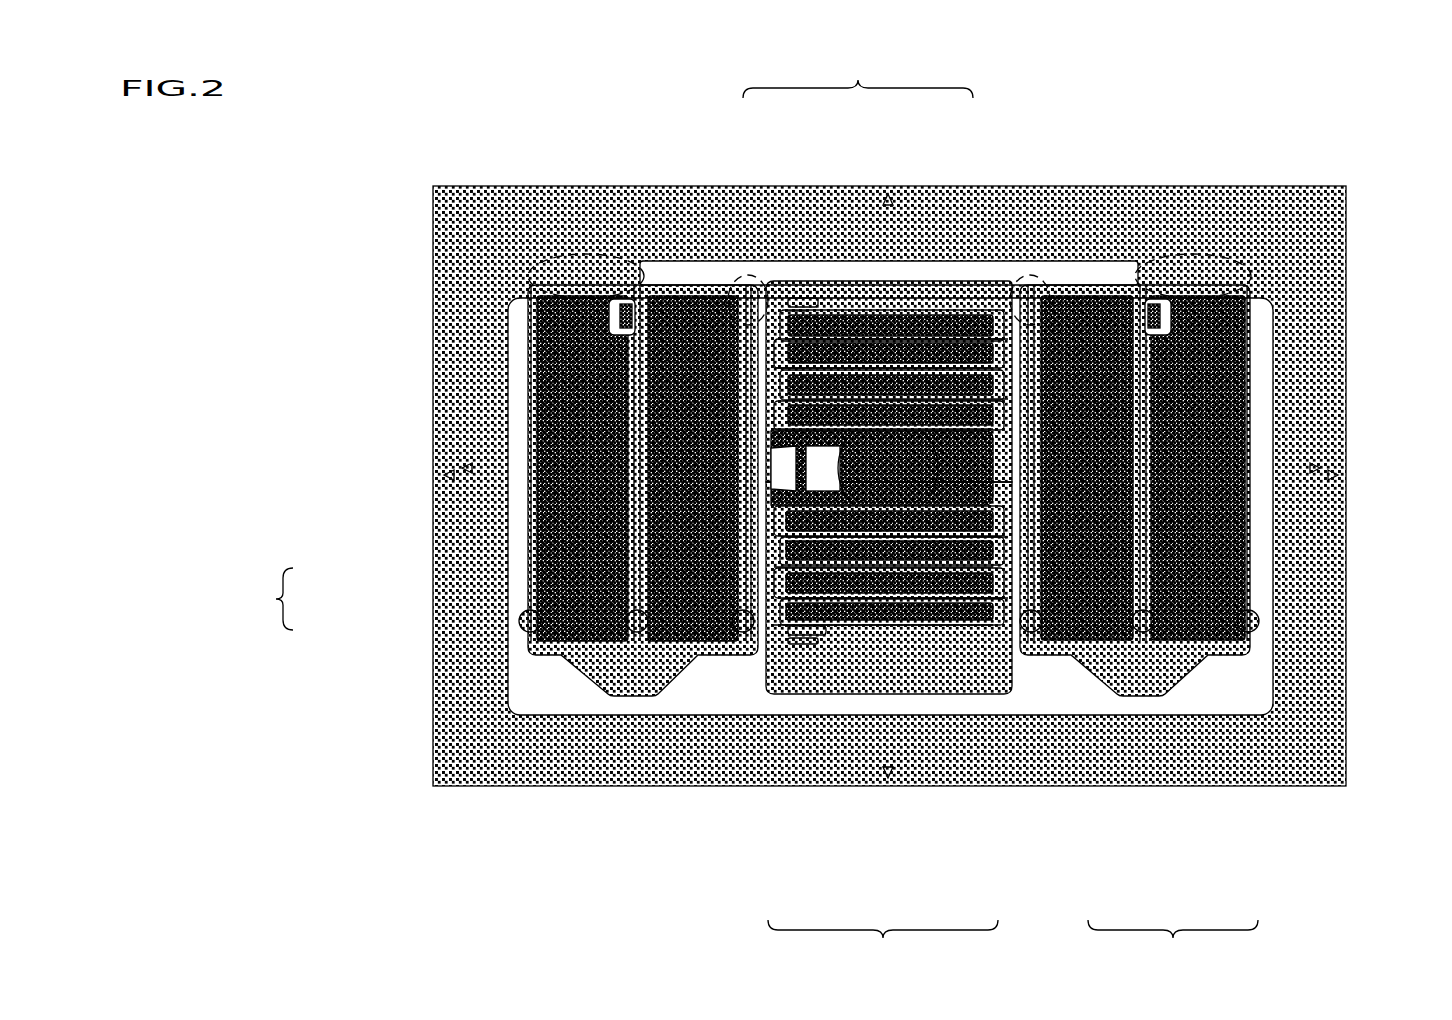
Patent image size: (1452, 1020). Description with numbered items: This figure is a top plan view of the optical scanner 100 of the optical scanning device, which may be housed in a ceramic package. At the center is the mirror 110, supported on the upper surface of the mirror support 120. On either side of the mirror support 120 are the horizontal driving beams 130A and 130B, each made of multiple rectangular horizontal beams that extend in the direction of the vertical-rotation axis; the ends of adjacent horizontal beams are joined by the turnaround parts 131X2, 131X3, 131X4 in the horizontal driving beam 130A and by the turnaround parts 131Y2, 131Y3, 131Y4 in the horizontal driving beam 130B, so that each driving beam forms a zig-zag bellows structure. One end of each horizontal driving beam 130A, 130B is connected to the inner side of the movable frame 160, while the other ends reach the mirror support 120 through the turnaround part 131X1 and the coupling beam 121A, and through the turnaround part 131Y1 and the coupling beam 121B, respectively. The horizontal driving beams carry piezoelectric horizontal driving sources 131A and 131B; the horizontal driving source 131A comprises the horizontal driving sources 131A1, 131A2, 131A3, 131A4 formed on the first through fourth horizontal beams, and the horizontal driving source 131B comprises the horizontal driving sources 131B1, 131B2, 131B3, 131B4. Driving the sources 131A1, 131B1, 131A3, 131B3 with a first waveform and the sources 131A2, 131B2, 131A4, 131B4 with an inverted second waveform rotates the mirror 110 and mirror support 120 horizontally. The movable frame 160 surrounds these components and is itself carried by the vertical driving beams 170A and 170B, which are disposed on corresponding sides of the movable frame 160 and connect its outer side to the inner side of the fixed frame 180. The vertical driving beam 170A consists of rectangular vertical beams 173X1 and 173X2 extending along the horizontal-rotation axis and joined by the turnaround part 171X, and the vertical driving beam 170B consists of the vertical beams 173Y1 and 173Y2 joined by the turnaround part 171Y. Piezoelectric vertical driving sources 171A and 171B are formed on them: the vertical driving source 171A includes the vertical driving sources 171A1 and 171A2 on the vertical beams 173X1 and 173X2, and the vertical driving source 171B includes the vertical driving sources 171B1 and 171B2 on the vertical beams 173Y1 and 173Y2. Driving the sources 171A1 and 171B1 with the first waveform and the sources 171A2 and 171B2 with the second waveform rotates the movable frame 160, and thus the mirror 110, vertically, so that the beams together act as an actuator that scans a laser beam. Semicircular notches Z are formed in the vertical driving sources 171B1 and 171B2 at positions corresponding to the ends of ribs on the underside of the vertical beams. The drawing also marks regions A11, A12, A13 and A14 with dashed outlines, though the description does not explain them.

The optical scanner 100 is at (373, 75).
The fixed frame 180 is at (1280, 205).
The vertical driving beam 170A is at (1203, 660).
The vertical driving beam 170B is at (546, 662).
The vertical driving source 171A is at (1173, 945).
The vertical driving source 171A1 is at (1070, 630).
The vertical driving source 171A2 is at (1177, 627).
The vertical driving source 171B is at (253, 599).
The vertical driving source 171B1 is at (548, 565).
The vertical driving source 171B2 is at (657, 522).
The turnaround part 171X is at (1122, 673).
The turnaround part 171Y is at (622, 677).
The vertical beam 173X1 is at (1140, 583).
The vertical beam 173X2 is at (1246, 628).
The vertical beam 173Y1 is at (590, 680).
The vertical beam 173Y2 is at (524, 612).
The horizontal driving beam 130A is at (945, 303).
The horizontal driving beam 130B is at (967, 632).
The horizontal driving source 131A is at (873, 240).
The horizontal driving source 131A1 is at (800, 410).
The horizontal driving source 131A2 is at (835, 380).
The horizontal driving source 131A3 is at (870, 345).
The horizontal driving source 131A4 is at (925, 318).
The horizontal driving source 131B is at (884, 738).
The horizontal driving source 131B1 is at (815, 518).
The horizontal driving source 131B2 is at (845, 545).
The horizontal driving source 131B3 is at (888, 578).
The horizontal driving source 131B4 is at (940, 605).
The turnaround part 131X1 is at (772, 421).
The turnaround part 131X2 is at (990, 391).
The turnaround part 131X3 is at (772, 360).
The turnaround part 131X4 is at (990, 331).
The turnaround part 131Y1 is at (767, 513).
The turnaround part 131Y2 is at (990, 529).
The turnaround part 131Y3 is at (773, 567).
The turnaround part 131Y4 is at (990, 591).
The mirror support 120 is at (965, 443).
The coupling beam 121A is at (793, 445).
The coupling beam 121B is at (778, 495).
The movable frame 160 is at (1008, 478).
The mirror 110 is at (758, 430).
The notch Z is at (620, 590).
The region A11 is at (1022, 262).
The region A12 is at (1178, 242).
The region A13 is at (740, 262).
The region A14 is at (568, 242).